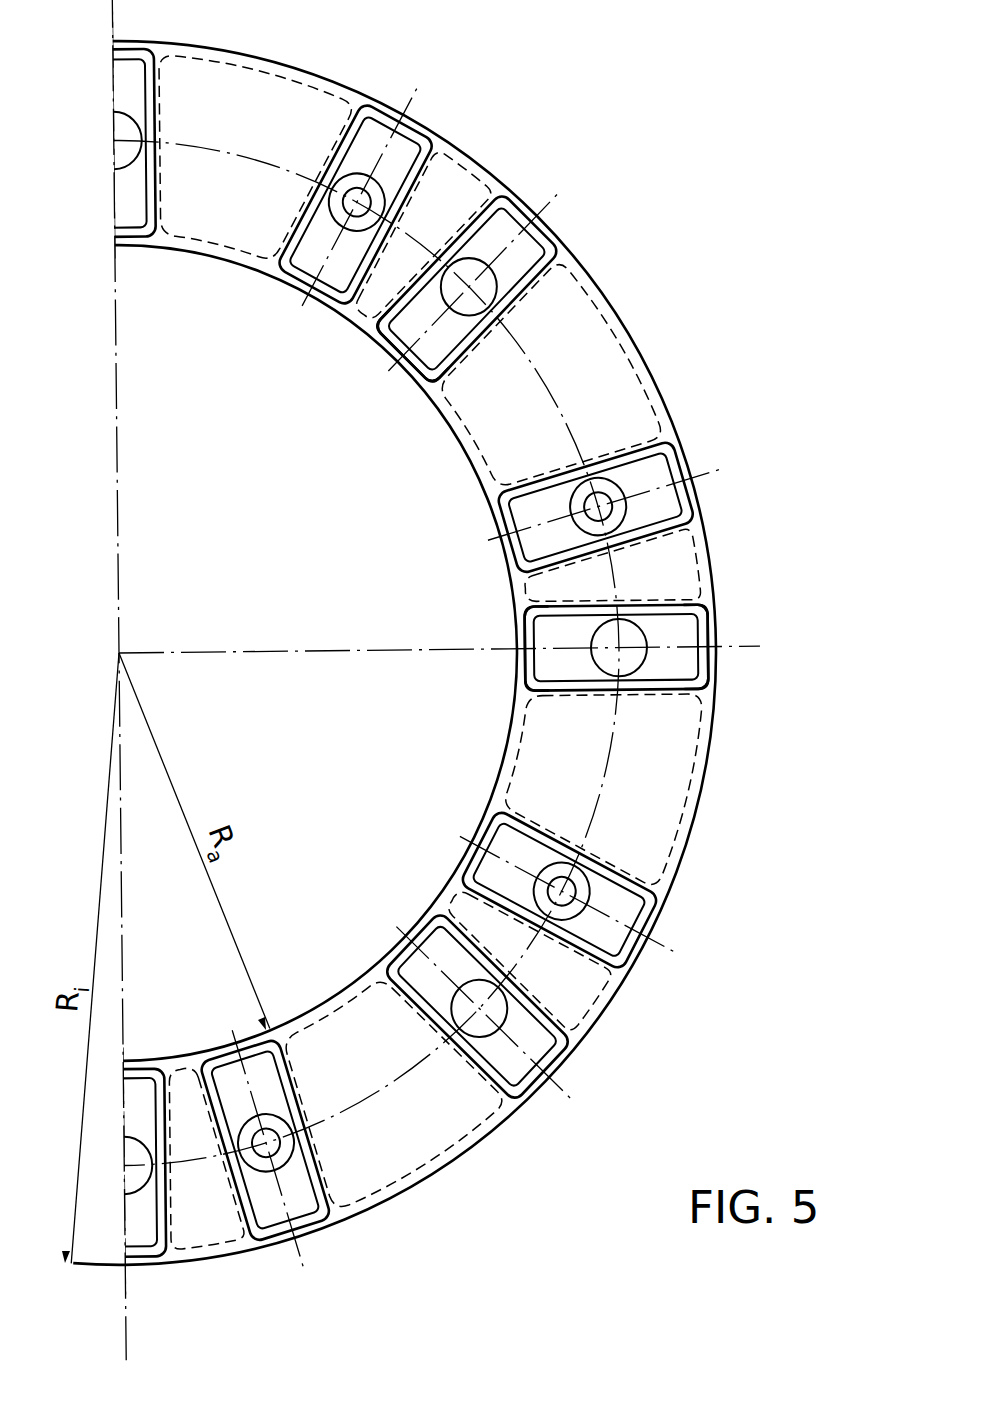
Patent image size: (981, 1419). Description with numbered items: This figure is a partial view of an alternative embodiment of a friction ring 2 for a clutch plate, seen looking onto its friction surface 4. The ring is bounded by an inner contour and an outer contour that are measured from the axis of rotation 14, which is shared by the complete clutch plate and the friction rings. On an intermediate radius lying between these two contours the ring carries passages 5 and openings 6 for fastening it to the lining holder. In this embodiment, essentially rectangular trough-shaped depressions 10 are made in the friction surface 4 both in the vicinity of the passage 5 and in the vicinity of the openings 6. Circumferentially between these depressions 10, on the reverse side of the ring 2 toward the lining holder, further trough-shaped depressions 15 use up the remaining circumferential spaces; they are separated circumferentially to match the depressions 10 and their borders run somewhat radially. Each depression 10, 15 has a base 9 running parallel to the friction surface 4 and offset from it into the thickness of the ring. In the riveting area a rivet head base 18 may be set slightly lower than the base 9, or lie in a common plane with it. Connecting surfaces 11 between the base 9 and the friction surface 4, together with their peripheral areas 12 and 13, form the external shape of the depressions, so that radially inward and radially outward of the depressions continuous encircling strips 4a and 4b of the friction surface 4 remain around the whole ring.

The friction ring 2 is at (688, 850).
The friction surface 4 is at (672, 437).
The strip of the friction surface 4a is at (523, 663).
The strip of the friction surface 4b is at (715, 662).
The passage 5 is at (356, 202).
The opening 6 is at (466, 292).
The base 9 is at (398, 155).
The trough-shaped depression 10 is at (385, 107).
The connecting surface 11 is at (547, 237).
The peripheral area 12 is at (517, 235).
The peripheral area 13 is at (393, 340).
The axis of rotation 14 is at (117, 655).
The trough-shaped depression 15 is at (476, 163).
The rivet head base 18 is at (362, 186).